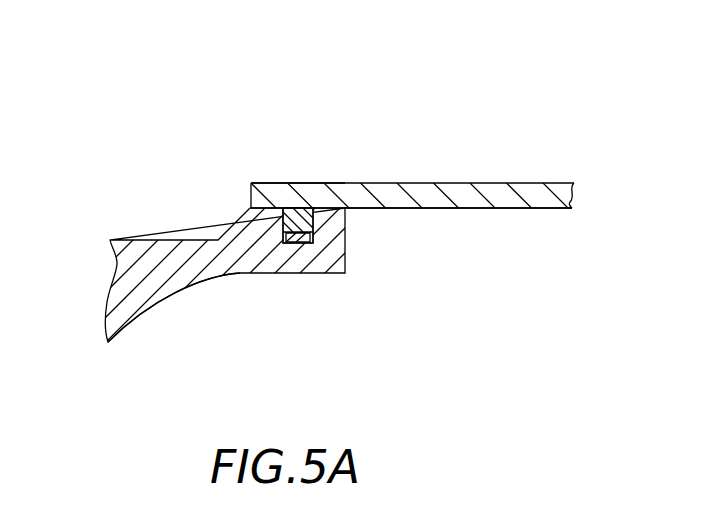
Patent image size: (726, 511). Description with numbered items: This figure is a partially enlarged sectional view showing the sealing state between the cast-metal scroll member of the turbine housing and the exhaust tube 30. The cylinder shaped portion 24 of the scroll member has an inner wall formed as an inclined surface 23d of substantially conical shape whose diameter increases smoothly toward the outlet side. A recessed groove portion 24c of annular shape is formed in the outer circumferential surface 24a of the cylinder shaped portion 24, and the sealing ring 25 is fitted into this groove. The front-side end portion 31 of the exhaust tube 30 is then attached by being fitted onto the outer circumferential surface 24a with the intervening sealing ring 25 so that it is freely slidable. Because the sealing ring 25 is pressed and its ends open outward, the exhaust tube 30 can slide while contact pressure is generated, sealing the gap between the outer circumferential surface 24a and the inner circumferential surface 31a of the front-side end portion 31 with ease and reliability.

The cylinder shaped portion 24 is at (157, 238).
The outer circumferential surface 24a is at (275, 208).
The recessed groove portion 24c is at (293, 243).
The sealing ring 25 is at (300, 208).
The exhaust tube 30 is at (462, 182).
The front-side end portion 31 is at (280, 192).
The inner circumferential surface 31a is at (388, 210).
The inclined surface 23d is at (129, 323).